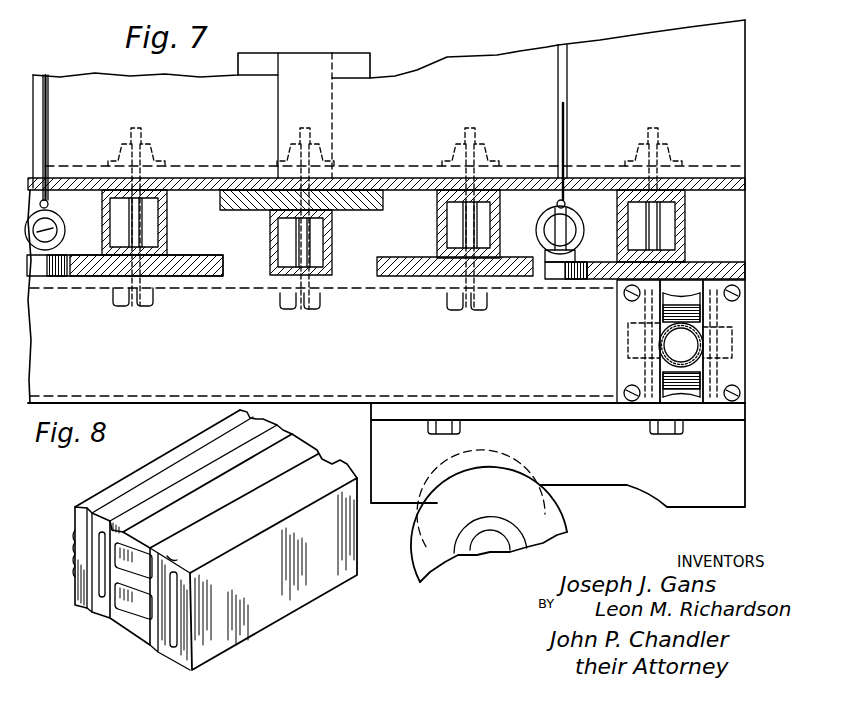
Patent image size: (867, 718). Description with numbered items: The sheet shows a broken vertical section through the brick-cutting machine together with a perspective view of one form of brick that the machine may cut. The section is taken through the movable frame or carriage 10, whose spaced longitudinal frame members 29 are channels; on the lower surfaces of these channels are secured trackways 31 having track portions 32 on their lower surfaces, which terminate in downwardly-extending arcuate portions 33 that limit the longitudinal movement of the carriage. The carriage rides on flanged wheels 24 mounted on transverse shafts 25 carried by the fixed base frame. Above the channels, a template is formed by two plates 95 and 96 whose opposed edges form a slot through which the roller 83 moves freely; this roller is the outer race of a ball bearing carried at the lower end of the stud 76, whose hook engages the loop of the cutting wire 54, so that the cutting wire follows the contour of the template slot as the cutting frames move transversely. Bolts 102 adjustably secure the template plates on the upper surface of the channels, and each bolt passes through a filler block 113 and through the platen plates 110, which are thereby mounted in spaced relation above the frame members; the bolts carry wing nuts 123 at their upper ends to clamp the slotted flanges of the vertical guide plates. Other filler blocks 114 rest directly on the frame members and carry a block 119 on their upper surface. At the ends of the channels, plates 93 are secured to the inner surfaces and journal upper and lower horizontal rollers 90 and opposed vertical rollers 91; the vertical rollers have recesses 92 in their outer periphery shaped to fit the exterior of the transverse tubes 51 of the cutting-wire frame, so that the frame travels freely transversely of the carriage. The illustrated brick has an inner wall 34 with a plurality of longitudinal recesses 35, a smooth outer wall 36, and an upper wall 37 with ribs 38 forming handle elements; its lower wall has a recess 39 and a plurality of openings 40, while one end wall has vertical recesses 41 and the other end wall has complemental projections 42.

In FIG. 7, the movable frame or carriage 10 is at (767, 300).
In FIG. 7, the flanged wheels 24 is at (560, 534).
In FIG. 7, the transverse shafts 25 is at (473, 545).
In FIG. 7, the longitudinal frame members 29 is at (348, 404).
In FIG. 7, the trackways 31 is at (740, 476).
In FIG. 7, the track portions 32 is at (615, 486).
In FIG. 7, the arcuate portions 33 is at (650, 498).
In FIG. 8, the inner wall 34 is at (75, 517).
In FIG. 8, the longitudinal recesses 35 is at (75, 545).
In FIG. 8, the outer wall 36 is at (295, 602).
In FIG. 8, the upper wall 37 is at (167, 457).
In FIG. 8, the ribs 38 is at (248, 455).
In FIG. 8, the recess 39 is at (147, 641).
In FIG. 8, the openings 40 is at (140, 614).
In FIG. 8, the vertical recesses 41 is at (178, 560).
In FIG. 8, the complemental projections 42 is at (348, 468).
In FIG. 7, the lower transverse members 51 is at (741, 350).
In FIG. 7, the cutting wire 54 is at (50, 128).
In FIG. 7, the stud 76 is at (566, 240).
In FIG. 7, the roller 83 is at (55, 277).
In FIG. 7, the horizontal rollers 90 is at (703, 312).
In FIG. 7, the vertical rollers 91 is at (630, 346).
In FIG. 7, the recesses 92 is at (705, 336).
In FIG. 7, the plates 93 is at (623, 373).
In FIG. 7, the template plate 95 is at (520, 277).
In FIG. 7, the template plate 96 is at (221, 277).
In FIG. 7, the bolts 102 is at (305, 311).
In FIG. 7, the platen plates 110 is at (405, 178).
In FIG. 7, the filler blocks 113 is at (437, 236).
In FIG. 7, the filler blocks 114 is at (334, 243).
In FIG. 7, the block 119 is at (246, 211).
In FIG. 7, the wing nuts 123 is at (487, 150).